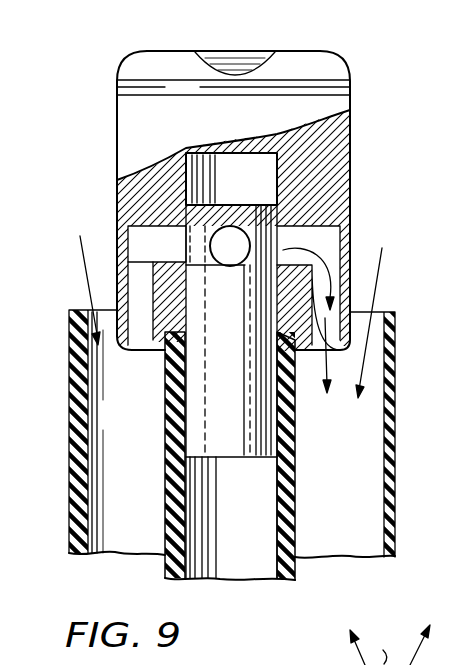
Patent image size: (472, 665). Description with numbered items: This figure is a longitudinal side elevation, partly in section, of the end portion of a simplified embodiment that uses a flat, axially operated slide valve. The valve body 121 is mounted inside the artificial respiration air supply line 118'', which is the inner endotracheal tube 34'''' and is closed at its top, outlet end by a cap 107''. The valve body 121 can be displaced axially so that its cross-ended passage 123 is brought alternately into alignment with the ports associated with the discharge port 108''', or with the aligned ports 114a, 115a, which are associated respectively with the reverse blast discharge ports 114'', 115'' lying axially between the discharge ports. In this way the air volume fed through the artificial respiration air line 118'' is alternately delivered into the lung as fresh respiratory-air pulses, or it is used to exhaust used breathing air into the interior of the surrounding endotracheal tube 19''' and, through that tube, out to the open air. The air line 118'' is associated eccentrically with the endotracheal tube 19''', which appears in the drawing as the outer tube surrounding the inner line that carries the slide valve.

The cap 107'' is at (229, 176).
The aligned port 114a is at (155, 268).
The aligned port 115a is at (300, 237).
The reverse blast discharge port 114'' is at (108, 394).
The reverse blast discharge port 115'' is at (345, 345).
The artificial respiration air line 118'' is at (272, 456).
The endotracheal tube 19''' is at (232, 434).
The valve body 121 is at (252, 415).
The cross-ended passage 123 is at (212, 242).
The endotracheal tube 34'''' is at (274, 598).
The discharge port 108''' is at (391, 642).